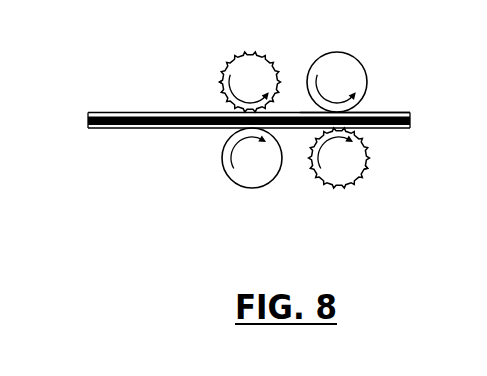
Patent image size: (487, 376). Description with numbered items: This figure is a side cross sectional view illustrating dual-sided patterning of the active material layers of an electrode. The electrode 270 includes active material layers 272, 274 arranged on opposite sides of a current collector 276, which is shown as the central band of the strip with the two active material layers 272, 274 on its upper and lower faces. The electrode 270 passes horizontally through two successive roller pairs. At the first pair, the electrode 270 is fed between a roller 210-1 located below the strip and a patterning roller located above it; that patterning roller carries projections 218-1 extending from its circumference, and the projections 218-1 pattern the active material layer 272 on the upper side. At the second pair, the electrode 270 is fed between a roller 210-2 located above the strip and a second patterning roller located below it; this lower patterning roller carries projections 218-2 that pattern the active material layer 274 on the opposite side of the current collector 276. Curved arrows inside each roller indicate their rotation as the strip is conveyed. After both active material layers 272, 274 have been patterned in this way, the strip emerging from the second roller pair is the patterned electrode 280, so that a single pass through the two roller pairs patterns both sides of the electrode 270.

The electrode 270 is at (89, 70).
The active material layer 272 is at (98, 112).
The active material layer 274 is at (108, 128).
The current collector 276 is at (188, 128).
The patterned electrode 280 is at (387, 112).
The roller 210-1 is at (255, 188).
The roller 210-2 is at (340, 52).
The projections 218-1 is at (220, 81).
The projections 218-2 is at (371, 165).